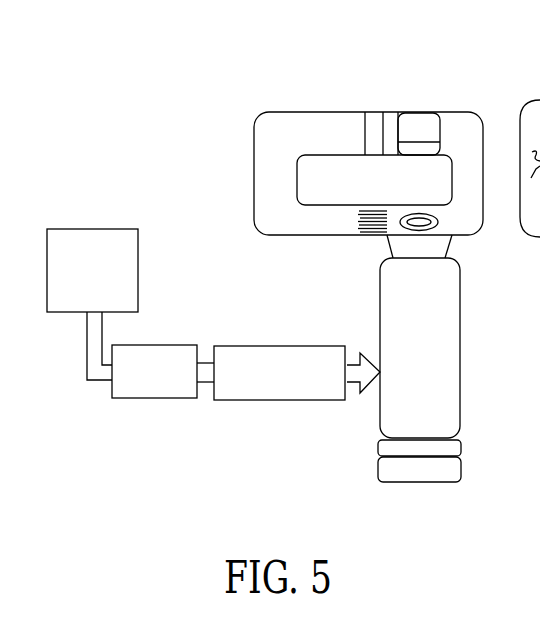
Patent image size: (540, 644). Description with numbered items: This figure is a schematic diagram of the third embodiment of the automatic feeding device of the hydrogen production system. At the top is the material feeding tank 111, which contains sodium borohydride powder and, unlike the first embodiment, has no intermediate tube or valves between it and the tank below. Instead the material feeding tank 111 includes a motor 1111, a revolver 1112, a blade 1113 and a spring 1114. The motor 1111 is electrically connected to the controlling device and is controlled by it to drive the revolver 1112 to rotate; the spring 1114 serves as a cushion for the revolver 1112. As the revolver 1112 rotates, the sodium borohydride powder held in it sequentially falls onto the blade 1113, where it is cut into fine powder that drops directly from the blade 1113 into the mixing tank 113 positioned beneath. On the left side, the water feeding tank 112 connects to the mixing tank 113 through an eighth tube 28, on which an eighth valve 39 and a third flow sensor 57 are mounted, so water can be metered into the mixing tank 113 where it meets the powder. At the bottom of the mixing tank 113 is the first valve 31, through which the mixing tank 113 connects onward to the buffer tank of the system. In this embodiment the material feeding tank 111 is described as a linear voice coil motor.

The material feeding tank 111 is at (287, 112).
The motor 1111 is at (440, 125).
The revolver 1112 is at (312, 155).
The blade 1113 is at (437, 223).
The spring 1114 is at (358, 212).
The water feeding tank 112 is at (100, 229).
The mixing tank 113 is at (460, 370).
The eighth tube 28 is at (87, 370).
The eighth valve 39 is at (112, 388).
The third flow sensor 57 is at (262, 400).
The first valve 31 is at (461, 448).